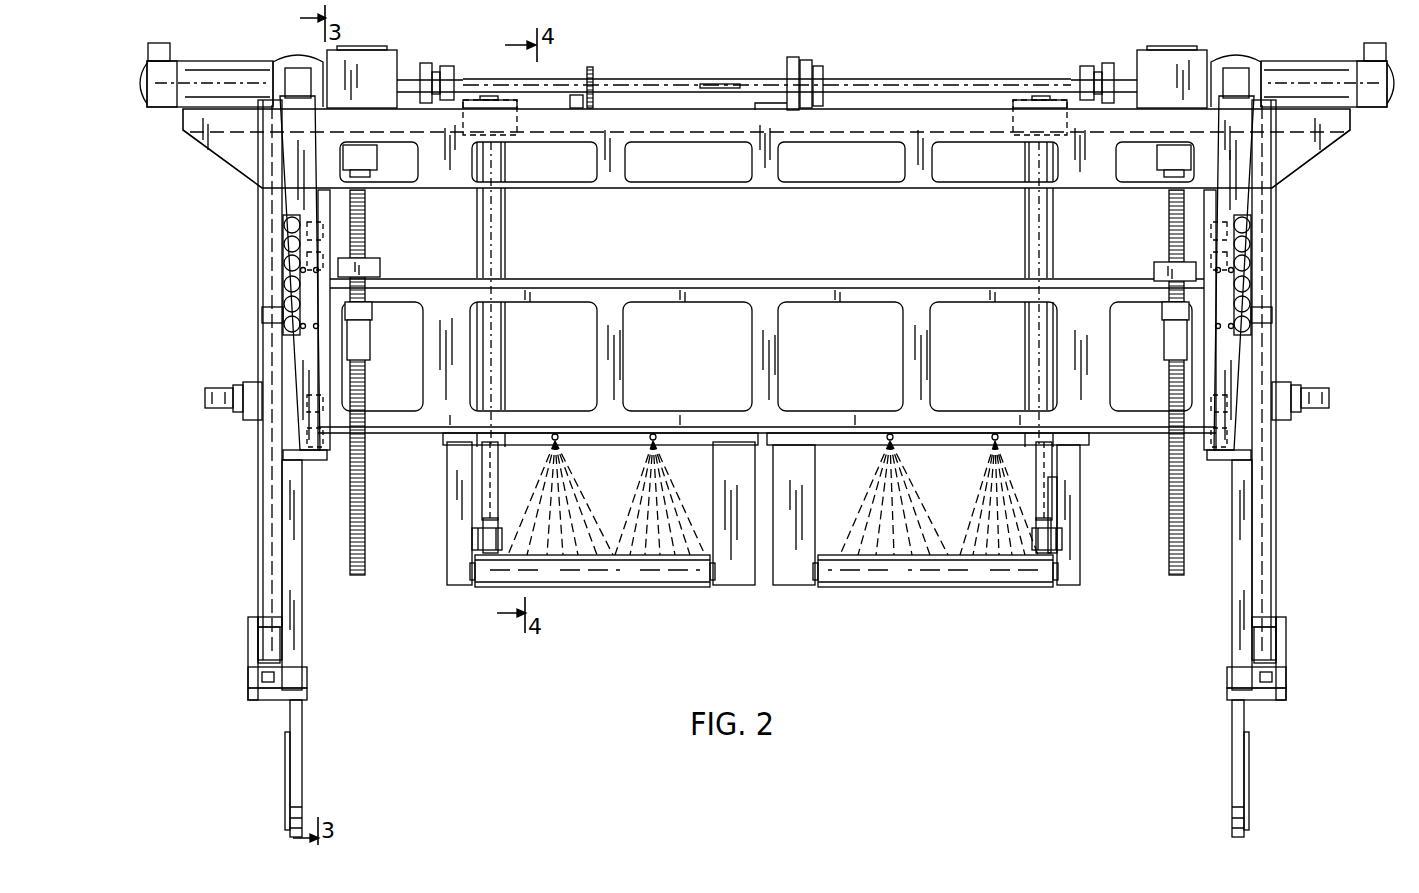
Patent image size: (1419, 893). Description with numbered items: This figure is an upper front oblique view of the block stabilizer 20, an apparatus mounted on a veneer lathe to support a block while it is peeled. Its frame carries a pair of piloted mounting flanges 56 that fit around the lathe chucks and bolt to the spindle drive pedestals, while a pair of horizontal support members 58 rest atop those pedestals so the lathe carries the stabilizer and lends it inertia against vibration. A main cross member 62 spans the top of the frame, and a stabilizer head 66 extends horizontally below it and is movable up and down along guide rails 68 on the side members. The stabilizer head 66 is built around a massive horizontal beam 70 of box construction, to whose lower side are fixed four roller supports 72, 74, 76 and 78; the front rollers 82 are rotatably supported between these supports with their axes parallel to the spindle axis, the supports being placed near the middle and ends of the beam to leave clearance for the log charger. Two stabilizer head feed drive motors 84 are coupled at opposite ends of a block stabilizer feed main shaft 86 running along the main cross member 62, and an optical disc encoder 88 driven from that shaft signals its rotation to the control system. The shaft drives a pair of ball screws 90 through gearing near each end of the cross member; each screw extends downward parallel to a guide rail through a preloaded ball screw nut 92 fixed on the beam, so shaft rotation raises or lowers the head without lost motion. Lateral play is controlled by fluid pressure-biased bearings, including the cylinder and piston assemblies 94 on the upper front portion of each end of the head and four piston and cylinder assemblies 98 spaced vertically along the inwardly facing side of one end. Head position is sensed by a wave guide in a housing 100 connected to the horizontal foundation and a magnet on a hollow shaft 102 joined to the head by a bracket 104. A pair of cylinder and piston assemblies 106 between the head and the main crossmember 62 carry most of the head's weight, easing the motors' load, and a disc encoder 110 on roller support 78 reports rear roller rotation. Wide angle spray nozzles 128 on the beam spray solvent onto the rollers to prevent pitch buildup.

The block stabilizer 20 is at (849, 628).
The piloted mounting flanges 56 is at (302, 733).
The horizontal support members 58 is at (248, 696).
The main cross member 62 is at (648, 129).
The stabilizer head 66 is at (779, 272).
The guide rails 68 is at (300, 558).
The horizontal beam 70 is at (622, 282).
The roller support 72 is at (452, 464).
The roller support 74 is at (714, 465).
The roller support 76 is at (808, 466).
The roller support 78 is at (1073, 466).
The front rollers 82 is at (600, 587).
The stabilizer head feed drive motors 84 is at (250, 68).
The block stabilizer feed main shaft 86 is at (910, 79).
The optical disc encoder 88 is at (572, 95).
The ball screws 90 is at (366, 237).
The ball screw nut 92 is at (380, 266).
The cylinder and piston assemblies 94 is at (284, 263).
The piston and cylinder assemblies 98 is at (325, 262).
The housing 100 is at (270, 342).
The hollow shaft 102 is at (270, 280).
The bracket 104 is at (300, 146).
The cylinder and piston assemblies 106 is at (500, 240).
The disc encoder 110 is at (1052, 506).
The wide angle spray nozzles 128 is at (652, 433).